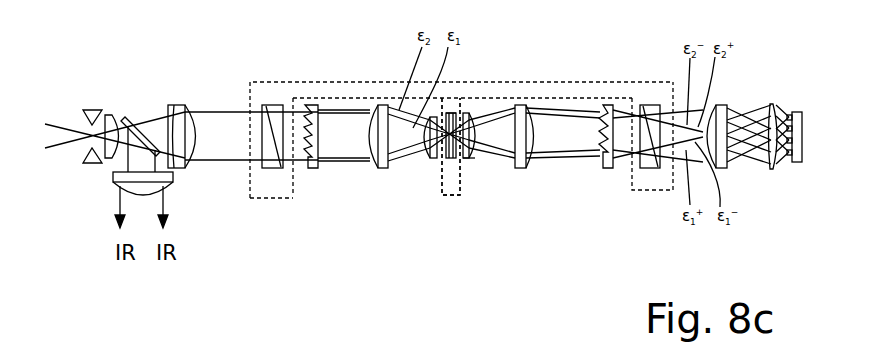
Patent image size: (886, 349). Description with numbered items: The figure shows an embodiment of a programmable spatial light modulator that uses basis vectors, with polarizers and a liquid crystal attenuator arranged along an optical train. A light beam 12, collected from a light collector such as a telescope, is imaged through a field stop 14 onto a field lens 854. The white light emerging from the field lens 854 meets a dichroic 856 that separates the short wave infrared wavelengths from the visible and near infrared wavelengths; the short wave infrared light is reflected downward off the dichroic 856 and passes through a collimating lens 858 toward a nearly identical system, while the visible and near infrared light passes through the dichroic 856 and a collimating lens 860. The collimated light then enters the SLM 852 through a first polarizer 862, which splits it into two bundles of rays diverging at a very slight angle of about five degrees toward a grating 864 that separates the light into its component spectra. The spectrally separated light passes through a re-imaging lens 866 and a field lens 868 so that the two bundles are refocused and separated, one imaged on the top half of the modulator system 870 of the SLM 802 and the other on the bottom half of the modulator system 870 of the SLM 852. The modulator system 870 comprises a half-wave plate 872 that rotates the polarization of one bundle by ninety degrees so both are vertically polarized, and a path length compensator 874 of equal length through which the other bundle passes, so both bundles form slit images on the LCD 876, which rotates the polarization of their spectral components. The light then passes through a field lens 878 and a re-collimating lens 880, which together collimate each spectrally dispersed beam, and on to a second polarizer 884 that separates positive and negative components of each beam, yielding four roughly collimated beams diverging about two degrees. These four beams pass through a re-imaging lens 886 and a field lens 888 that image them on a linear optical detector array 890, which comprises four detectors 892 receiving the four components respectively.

The light beam 12 is at (62, 127).
The field stop 14 is at (93, 107).
The field lens 854 is at (112, 112).
The dichroic 856 is at (128, 122).
The collimating lens 858 is at (173, 182).
The collimating lens 860 is at (182, 106).
The programmable SLM 852 is at (250, 87).
The first polarizer 862 is at (273, 104).
The grating 864 is at (315, 108).
The re-imaging lens 866 is at (383, 105).
The field lens 868 is at (428, 163).
The modulator system 870 is at (460, 162).
The half-wave plate 872 is at (448, 112).
The path length compensator 874 is at (454, 165).
The LCD 876 is at (458, 109).
The field lens 878 is at (472, 162).
The re-collimating lens 880 is at (527, 104).
The SLM 802 is at (607, 106).
The second polarizer 884 is at (652, 172).
The re-imaging lens 886 is at (718, 108).
The field lens 888 is at (774, 108).
The linear optical detector array 890 is at (803, 110).
The detectors 892 is at (789, 158).